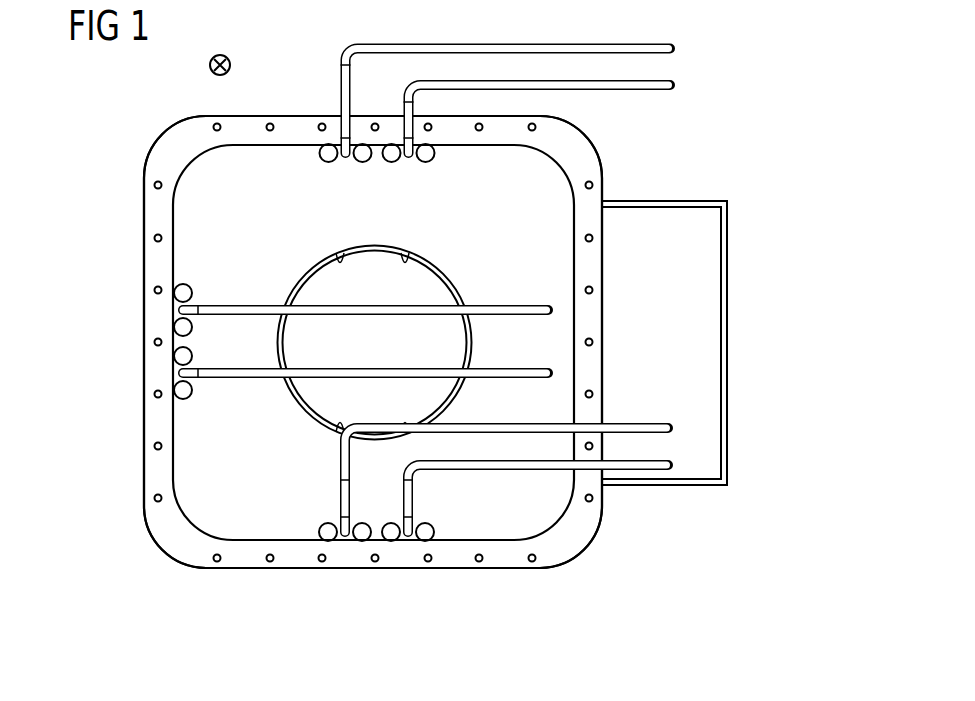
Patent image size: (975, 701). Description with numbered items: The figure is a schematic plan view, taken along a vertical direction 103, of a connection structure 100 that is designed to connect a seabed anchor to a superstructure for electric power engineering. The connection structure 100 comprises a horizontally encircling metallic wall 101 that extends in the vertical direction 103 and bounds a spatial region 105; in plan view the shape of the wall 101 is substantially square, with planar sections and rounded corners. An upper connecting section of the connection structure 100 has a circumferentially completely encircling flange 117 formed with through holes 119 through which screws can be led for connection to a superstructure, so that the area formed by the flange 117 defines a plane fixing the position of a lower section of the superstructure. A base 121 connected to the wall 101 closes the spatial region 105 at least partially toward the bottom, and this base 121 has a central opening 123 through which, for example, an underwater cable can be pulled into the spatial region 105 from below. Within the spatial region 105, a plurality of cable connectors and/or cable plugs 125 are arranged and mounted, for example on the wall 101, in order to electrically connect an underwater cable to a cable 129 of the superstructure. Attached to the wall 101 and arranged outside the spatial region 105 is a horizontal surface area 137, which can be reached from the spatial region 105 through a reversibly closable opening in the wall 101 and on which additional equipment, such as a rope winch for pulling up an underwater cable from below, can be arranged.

The connection structure 100 is at (712, 75).
The encircling metallic wall 101 is at (262, 578).
The vertical direction 103 is at (231, 65).
The spatial region 105 is at (414, 219).
The flange 117 is at (578, 536).
The through holes 119 is at (530, 562).
The base 121 is at (536, 190).
The central opening 123 is at (312, 283).
The cable connectors and/or cable plugs 125 is at (312, 522).
The cable of the superstructure 129 is at (497, 304).
The horizontal surface area 137 is at (650, 235).